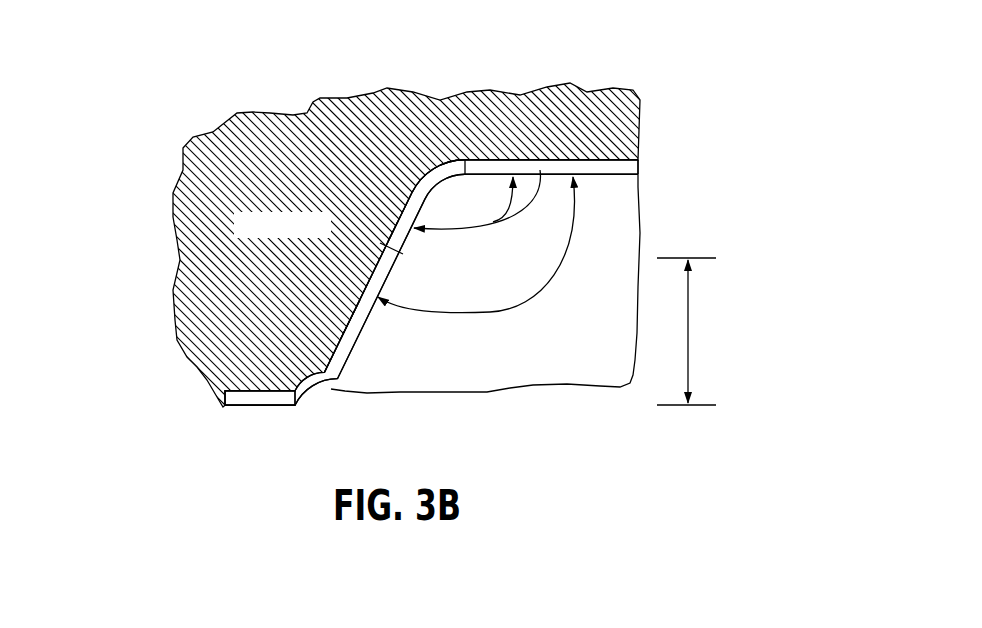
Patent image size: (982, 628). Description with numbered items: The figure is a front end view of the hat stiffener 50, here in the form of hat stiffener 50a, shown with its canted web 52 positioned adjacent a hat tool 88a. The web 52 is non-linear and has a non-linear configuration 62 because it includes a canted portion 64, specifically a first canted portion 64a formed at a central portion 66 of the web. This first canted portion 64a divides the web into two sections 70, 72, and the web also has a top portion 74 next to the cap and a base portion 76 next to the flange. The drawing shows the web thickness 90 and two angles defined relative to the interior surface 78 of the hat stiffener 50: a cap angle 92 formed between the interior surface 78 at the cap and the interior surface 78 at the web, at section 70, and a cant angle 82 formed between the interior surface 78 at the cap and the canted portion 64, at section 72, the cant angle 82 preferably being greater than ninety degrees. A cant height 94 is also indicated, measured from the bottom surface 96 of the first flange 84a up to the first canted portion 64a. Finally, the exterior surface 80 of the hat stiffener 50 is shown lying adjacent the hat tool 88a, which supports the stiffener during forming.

The hat stiffener 50 is at (555, 135).
The hat stiffener 50a is at (618, 178).
The canted web 52 is at (288, 373).
The non-linear configuration 62 is at (365, 327).
The canted portion 64 is at (384, 243).
The first canted portion 64a is at (403, 254).
The central portion 66 is at (390, 222).
The section 70 is at (406, 202).
The section 72 is at (341, 338).
The top portion 74 is at (447, 161).
The base portion 76 is at (308, 404).
The interior surface 78 is at (627, 181).
The exterior surface 80 is at (638, 142).
The cant angle 82 is at (574, 222).
The first flange 84a is at (244, 406).
The hat tool 88a is at (232, 222).
The web thickness 90 is at (352, 361).
The cap angle 92 is at (540, 170).
The cant height 94 is at (690, 300).
The bottom surface 96 is at (263, 406).